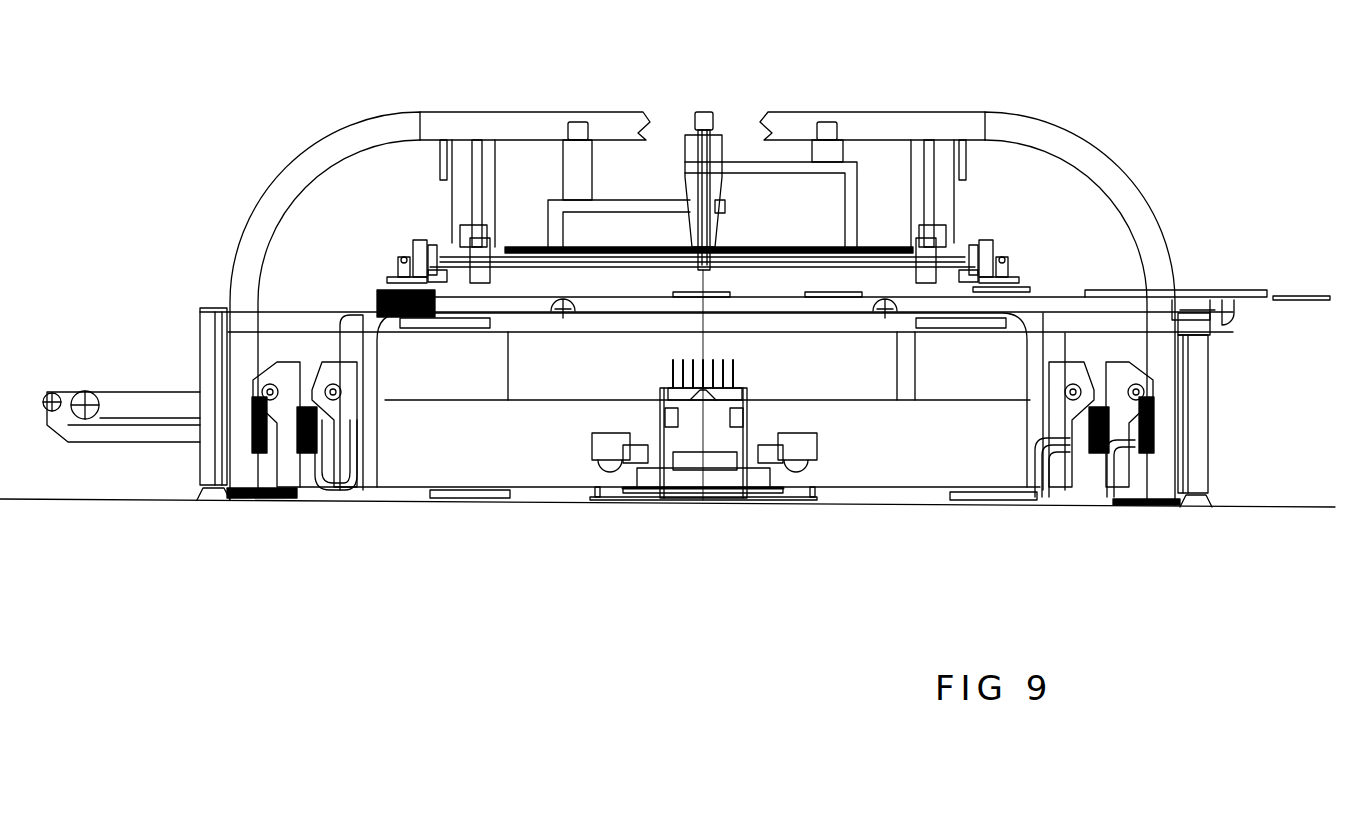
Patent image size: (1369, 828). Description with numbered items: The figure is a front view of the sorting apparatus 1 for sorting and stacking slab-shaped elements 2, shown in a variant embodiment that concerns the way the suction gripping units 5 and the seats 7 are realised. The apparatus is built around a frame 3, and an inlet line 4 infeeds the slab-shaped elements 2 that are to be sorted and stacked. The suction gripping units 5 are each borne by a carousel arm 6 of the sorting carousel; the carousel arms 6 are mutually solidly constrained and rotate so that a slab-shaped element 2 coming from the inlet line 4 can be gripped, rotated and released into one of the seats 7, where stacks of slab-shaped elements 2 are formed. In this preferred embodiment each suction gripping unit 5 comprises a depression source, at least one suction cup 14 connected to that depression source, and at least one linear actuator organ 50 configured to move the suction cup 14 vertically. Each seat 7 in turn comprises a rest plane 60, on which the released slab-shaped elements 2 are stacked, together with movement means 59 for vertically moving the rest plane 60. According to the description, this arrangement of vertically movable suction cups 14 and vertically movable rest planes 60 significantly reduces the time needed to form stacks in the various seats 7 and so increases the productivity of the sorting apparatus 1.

The sorting apparatus 1 is at (322, 112).
The slab-shaped element 2 is at (366, 298).
The frame 3 is at (470, 118).
The inlet line 4 is at (1255, 296).
The suction gripping unit 5 is at (397, 226).
The carousel arm 6 is at (518, 247).
The seat 7 is at (433, 432).
The suction cup 14 is at (392, 280).
The linear actuator organ 50 is at (398, 258).
The movement means 59 is at (297, 347).
The rest plane 60 is at (447, 334).